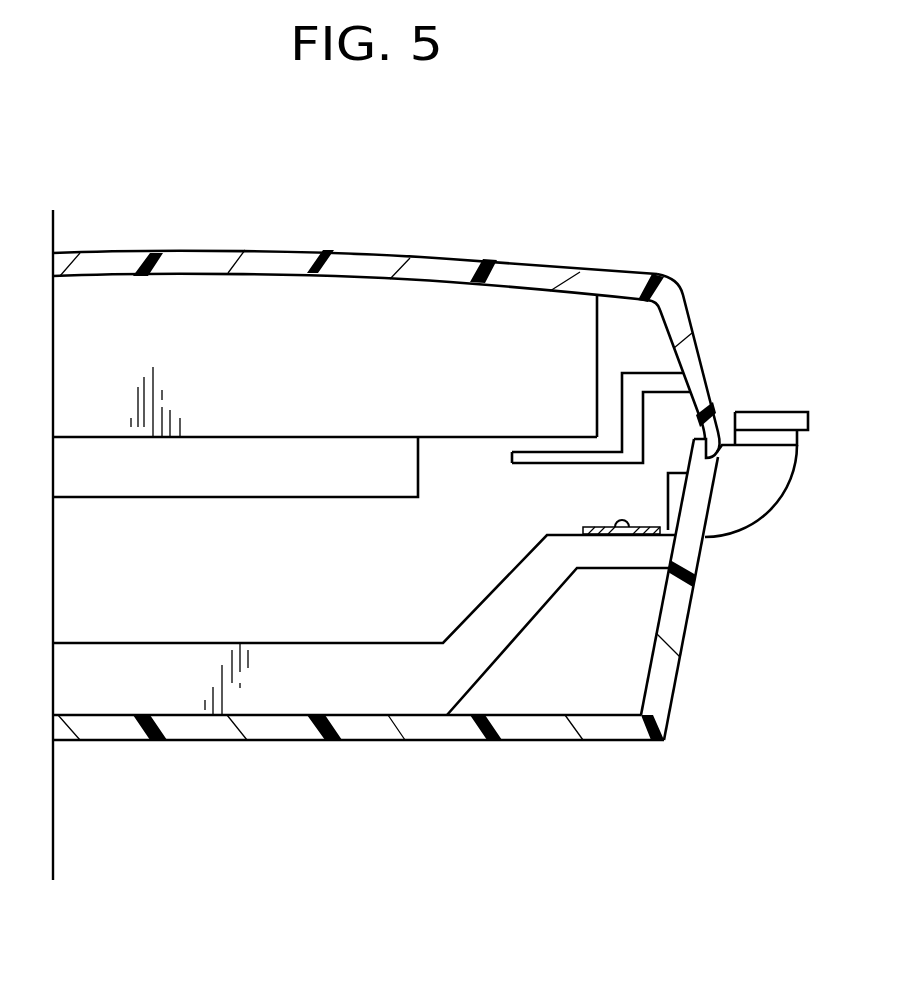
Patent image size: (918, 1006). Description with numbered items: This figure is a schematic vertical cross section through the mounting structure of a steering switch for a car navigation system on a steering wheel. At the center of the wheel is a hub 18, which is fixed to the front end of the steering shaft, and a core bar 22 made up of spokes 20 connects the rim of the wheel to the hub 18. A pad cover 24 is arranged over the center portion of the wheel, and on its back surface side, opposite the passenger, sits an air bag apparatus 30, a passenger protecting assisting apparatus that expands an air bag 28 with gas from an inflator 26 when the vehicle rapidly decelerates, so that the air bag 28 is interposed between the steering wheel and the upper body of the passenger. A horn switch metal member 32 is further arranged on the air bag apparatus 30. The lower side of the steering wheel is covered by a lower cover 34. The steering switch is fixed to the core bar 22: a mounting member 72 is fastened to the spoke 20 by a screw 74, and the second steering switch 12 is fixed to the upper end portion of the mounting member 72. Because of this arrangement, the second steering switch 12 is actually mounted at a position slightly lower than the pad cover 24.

The second steering switch 12 is at (797, 497).
The hub 18 is at (282, 687).
The spoke 20 is at (481, 628).
The core bar 22 is at (493, 686).
The pad cover 24 is at (457, 266).
The inflator 26 is at (327, 455).
The air bag 28 is at (225, 328).
The air bag apparatus 30 is at (302, 506).
The horn switch metal member 32 is at (575, 455).
The lower cover 34 is at (380, 728).
The mounting member 72 is at (617, 536).
The screw 74 is at (615, 524).